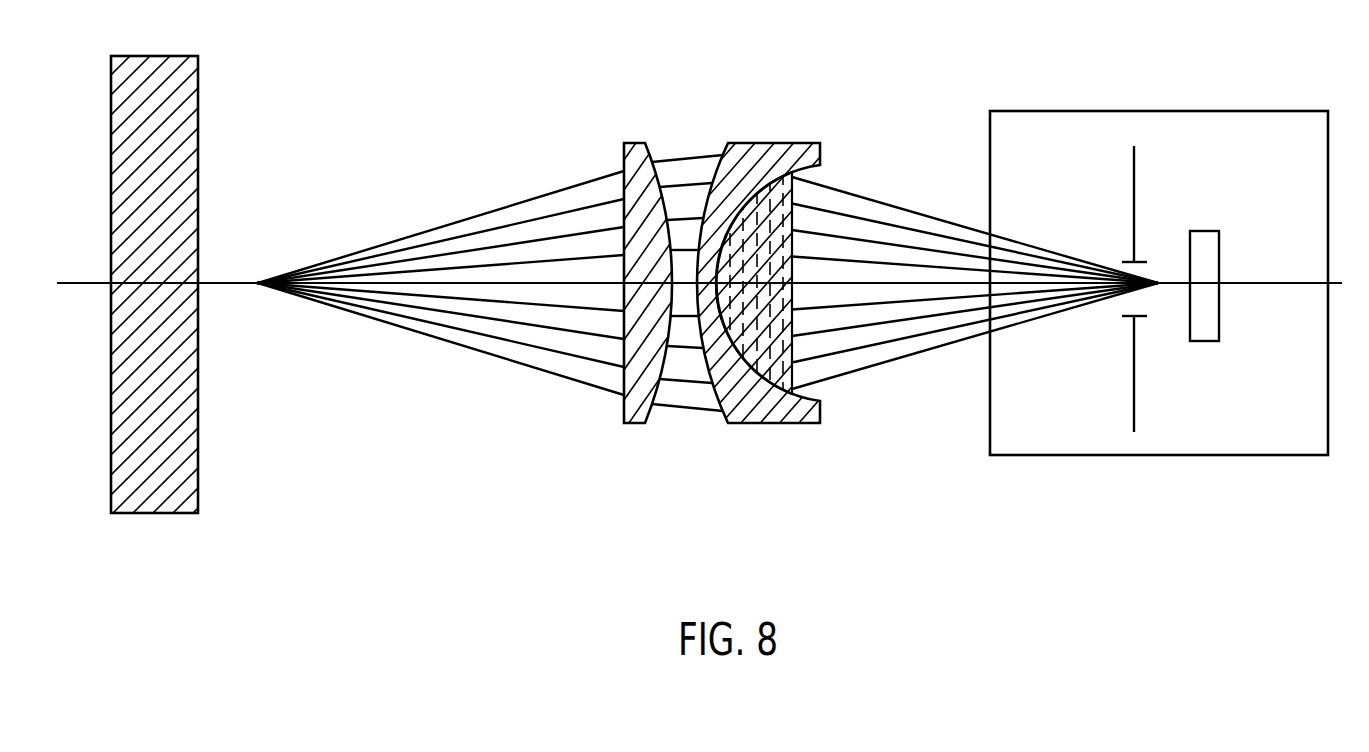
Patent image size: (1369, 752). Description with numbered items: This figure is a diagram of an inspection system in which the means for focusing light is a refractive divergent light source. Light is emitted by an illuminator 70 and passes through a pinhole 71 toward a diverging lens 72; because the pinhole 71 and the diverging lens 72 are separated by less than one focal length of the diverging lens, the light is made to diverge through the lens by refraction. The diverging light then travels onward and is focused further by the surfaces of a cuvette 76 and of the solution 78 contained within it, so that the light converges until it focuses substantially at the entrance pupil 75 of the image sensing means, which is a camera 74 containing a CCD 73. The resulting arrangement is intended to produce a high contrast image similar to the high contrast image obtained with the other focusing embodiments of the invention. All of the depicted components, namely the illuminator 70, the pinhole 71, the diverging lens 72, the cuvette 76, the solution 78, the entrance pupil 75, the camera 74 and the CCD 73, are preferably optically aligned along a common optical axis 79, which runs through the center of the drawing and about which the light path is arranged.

The illuminator 70 is at (198, 510).
The pinhole 71 is at (258, 282).
The diverging lens 72 is at (632, 142).
The CCD 73 is at (1203, 230).
The camera 74 is at (1102, 457).
The entrance pupil 75 is at (1137, 258).
The cuvette 76 is at (765, 427).
The solution 78 is at (775, 203).
The optical axis 79 is at (503, 287).